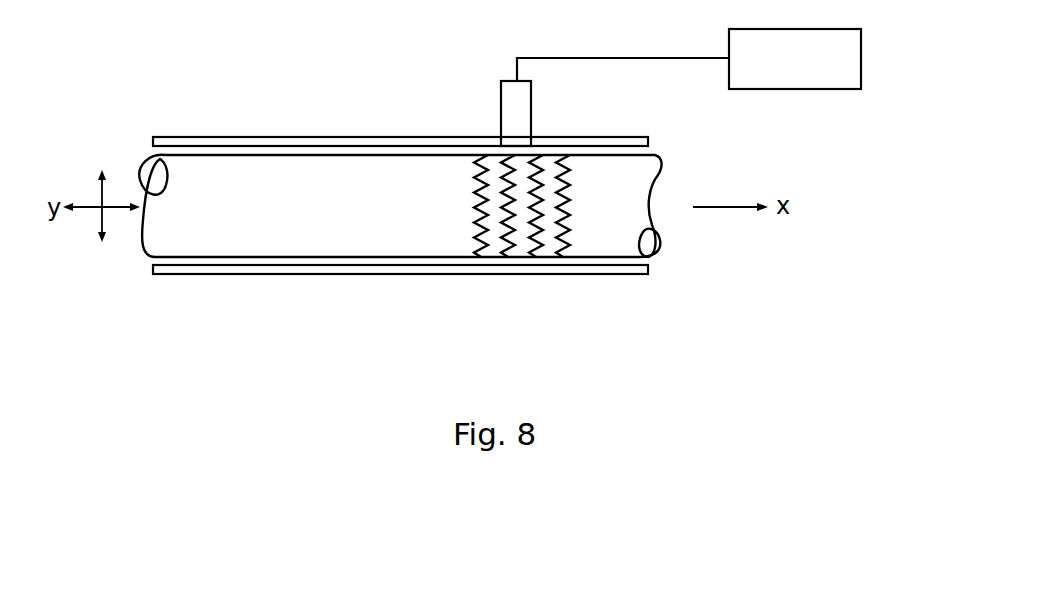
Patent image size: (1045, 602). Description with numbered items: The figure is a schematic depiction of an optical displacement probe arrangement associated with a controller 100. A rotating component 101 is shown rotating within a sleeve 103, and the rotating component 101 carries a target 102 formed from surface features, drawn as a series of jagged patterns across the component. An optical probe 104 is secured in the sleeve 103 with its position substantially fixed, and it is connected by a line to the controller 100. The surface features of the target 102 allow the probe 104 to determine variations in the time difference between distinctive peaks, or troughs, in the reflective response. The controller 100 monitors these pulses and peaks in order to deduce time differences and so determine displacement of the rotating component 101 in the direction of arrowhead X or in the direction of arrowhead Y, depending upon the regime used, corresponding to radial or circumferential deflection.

The controller 100 is at (861, 59).
The rotating component 101 is at (278, 242).
The target 102 is at (543, 230).
The sleeve 103 is at (430, 275).
The optical probe 104 is at (501, 110).